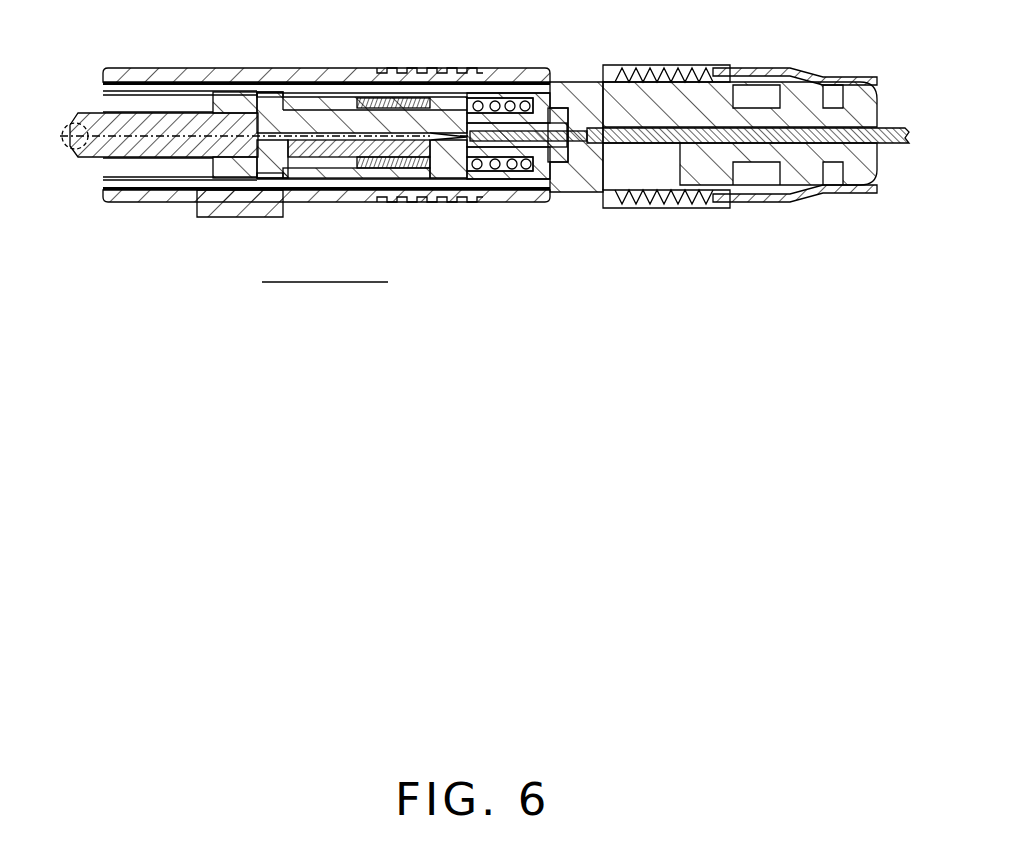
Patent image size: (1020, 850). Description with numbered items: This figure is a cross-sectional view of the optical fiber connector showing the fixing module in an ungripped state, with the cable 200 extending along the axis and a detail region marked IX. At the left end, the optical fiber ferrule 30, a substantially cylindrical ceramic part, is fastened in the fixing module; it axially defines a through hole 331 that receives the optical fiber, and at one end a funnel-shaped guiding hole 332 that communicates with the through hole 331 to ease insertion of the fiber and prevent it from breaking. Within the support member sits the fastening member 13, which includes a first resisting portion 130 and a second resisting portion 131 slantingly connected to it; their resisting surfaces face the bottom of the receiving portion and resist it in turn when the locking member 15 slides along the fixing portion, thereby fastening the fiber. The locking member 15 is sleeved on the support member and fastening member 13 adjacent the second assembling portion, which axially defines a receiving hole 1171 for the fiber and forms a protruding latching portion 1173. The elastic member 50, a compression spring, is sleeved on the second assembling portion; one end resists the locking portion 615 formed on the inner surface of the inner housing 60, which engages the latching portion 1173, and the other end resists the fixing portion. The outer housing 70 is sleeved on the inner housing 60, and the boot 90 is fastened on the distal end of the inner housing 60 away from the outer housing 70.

The outer housing 70 is at (142, 73).
The section view indicator IX is at (68, 125).
The optical fiber ferrule 30 is at (87, 148).
The through hole 331 is at (152, 140).
The guiding hole 332 is at (256, 100).
The fastening member 13 is at (362, 203).
The first resisting portion 130 is at (313, 147).
The second resisting portion 131 is at (390, 158).
The locking member 15 is at (418, 140).
The elastic member 50 is at (497, 100).
The locking portion 615 is at (510, 100).
The latching portion 1173 is at (556, 105).
The receiving hole 1171 is at (566, 120).
The cable 200 is at (897, 147).
The inner housing 60 is at (662, 105).
The boot 90 is at (752, 196).